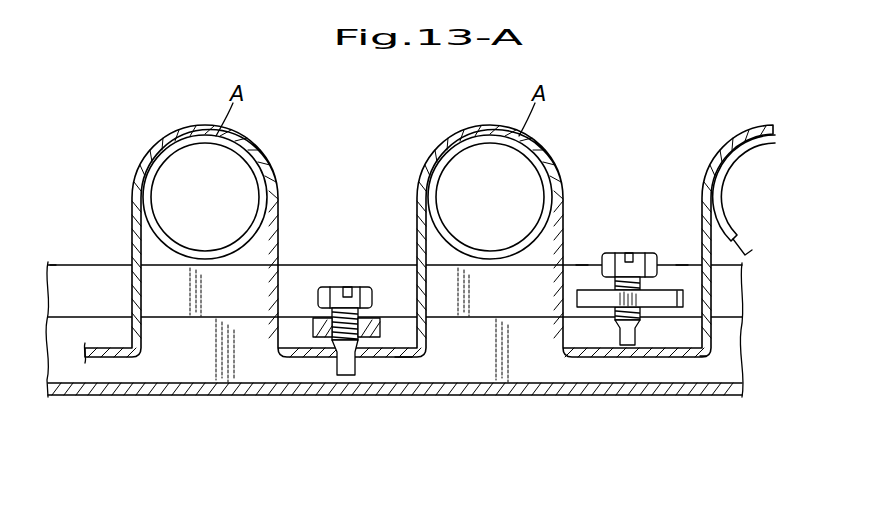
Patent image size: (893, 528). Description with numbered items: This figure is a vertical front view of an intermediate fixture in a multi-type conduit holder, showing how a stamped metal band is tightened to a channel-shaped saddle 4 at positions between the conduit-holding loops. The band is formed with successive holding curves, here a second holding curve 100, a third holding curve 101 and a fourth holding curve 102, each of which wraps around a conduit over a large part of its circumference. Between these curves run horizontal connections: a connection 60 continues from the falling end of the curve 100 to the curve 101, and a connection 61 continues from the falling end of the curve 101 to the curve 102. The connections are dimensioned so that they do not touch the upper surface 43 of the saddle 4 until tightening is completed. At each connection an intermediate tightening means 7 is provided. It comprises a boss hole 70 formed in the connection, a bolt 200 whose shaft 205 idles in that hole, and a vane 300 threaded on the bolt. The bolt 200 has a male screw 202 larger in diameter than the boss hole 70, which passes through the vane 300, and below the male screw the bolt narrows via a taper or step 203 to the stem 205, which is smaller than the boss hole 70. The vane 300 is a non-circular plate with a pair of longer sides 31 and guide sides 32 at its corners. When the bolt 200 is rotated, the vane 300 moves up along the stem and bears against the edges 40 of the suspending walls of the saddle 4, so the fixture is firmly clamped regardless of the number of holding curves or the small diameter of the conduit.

The saddle 4 is at (546, 396).
The intermediate tightening means 7 is at (509, 308).
The sides 31 is at (581, 265).
The guide sides 32 is at (684, 301).
The edges of the suspending walls 40 is at (178, 320).
The upper surface of the saddle 43 is at (84, 265).
The connection 60 is at (112, 357).
The connection 61 is at (404, 358).
The boss hole 70 is at (344, 376).
The second holding curve 100 is at (752, 124).
The third holding curve 101 is at (429, 210).
The fourth holding curve 102 is at (429, 210).
The bolt 200 is at (488, 308).
The male screw 202 is at (371, 302).
The taper or step 203 is at (377, 322).
The shaft or stem 205 is at (350, 360).
The vane 300 is at (522, 296).